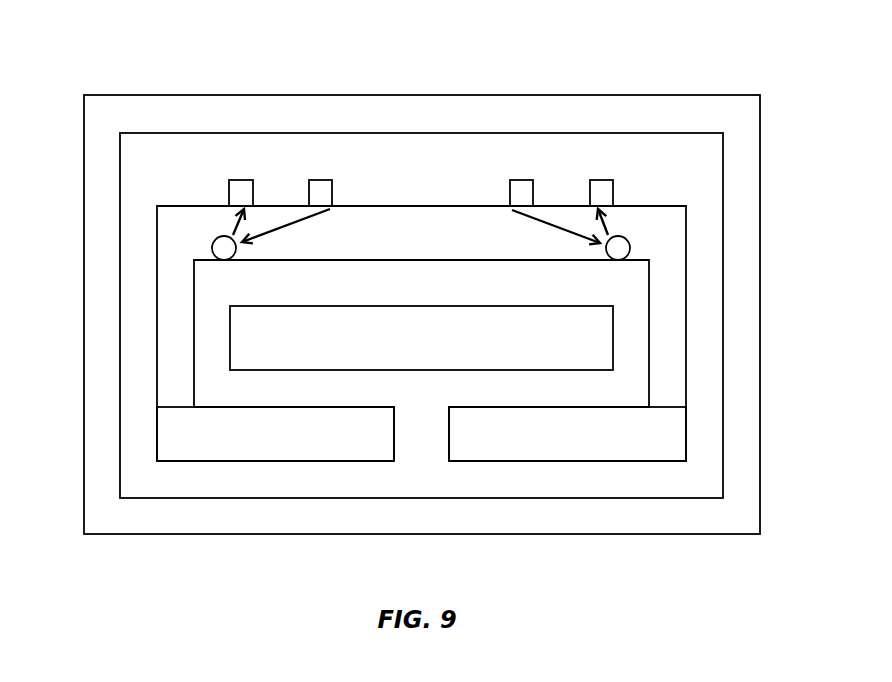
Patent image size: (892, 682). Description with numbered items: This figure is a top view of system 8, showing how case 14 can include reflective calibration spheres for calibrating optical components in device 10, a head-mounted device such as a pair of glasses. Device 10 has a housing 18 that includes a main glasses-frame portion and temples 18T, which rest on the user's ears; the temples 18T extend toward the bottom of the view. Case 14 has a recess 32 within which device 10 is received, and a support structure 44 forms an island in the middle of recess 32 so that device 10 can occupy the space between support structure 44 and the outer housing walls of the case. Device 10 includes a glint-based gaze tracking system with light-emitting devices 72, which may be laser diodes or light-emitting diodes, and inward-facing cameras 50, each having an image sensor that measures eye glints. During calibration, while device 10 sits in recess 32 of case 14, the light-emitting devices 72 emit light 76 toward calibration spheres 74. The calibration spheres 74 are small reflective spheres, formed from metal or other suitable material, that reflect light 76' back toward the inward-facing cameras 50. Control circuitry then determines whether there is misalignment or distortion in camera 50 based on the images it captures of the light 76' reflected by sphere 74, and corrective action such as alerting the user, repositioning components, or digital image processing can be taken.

The system 8 is at (740, 62).
The device 10 is at (420, 210).
The case 14 is at (420, 107).
The housing 18 is at (172, 309).
The temples 18T is at (279, 452).
The recess 32 is at (712, 170).
The support structure 44 is at (423, 360).
The inward-facing camera 50 is at (240, 185).
The light-emitting devices 72 is at (318, 185).
The calibration spheres 74 is at (212, 244).
The light 76 is at (421, 231).
The reflected light 76' is at (420, 195).